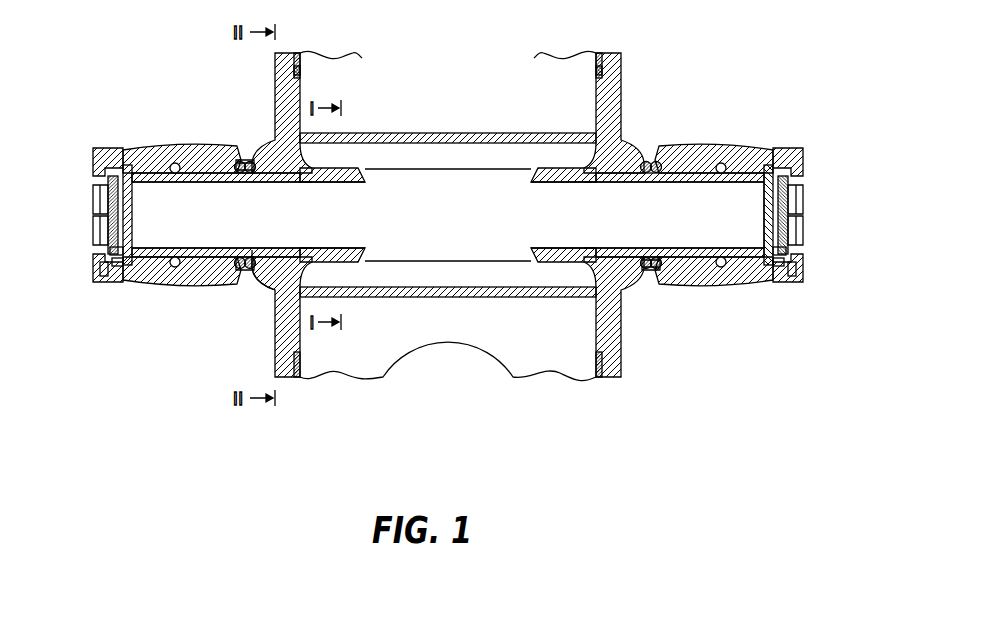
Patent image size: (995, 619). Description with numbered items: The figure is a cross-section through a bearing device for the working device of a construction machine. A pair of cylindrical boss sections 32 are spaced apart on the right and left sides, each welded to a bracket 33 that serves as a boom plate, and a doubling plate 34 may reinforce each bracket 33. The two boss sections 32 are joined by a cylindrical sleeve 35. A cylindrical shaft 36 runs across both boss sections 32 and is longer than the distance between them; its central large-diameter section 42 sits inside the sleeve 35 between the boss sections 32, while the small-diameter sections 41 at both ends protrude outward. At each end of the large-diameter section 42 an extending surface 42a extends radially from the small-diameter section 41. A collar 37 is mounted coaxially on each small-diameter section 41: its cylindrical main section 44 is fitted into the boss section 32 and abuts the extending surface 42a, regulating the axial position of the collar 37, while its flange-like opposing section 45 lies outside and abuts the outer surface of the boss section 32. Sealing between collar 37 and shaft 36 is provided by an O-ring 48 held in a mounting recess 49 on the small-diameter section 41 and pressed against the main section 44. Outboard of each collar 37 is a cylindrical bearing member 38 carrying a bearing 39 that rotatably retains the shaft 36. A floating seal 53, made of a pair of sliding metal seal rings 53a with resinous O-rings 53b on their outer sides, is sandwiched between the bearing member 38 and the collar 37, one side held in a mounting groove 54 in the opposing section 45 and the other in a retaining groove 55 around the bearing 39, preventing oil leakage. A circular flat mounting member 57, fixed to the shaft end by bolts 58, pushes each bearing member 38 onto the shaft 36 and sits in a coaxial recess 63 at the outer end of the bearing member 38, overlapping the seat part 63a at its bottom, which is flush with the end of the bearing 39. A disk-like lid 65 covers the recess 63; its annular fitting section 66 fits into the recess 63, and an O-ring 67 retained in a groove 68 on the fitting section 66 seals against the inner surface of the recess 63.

The boss section 32 is at (286, 80).
The bracket 33 is at (297, 57).
The doubling plate 34 is at (300, 70).
The cylindrical sleeve 35 is at (432, 133).
The shaft 36 is at (741, 190).
The collar 37 is at (275, 337).
The bearing member 38 is at (152, 147).
The bearing 39 is at (176, 163).
The small-diameter section 41 is at (150, 266).
The large-diameter section 42 is at (475, 169).
The extending surface 42a is at (363, 170).
The main section 44 is at (266, 276).
The opposing section 45 is at (236, 272).
The O-ring 48 is at (312, 173).
The mounting recess 49 is at (327, 250).
The floating seal 53 is at (238, 272).
The metal seal ring 53a is at (241, 161).
The O-ring 53b is at (238, 164).
The mounting groove 54 is at (658, 272).
The retaining groove 55 is at (672, 272).
The mounting member 57 is at (128, 166).
The bolt 58 is at (100, 202).
The recess 63 is at (108, 182).
The seat part 63a is at (118, 268).
The lid 65 is at (108, 272).
The fitting section 66 is at (110, 148).
The O-ring 67 is at (106, 282).
The groove 68 is at (112, 252).